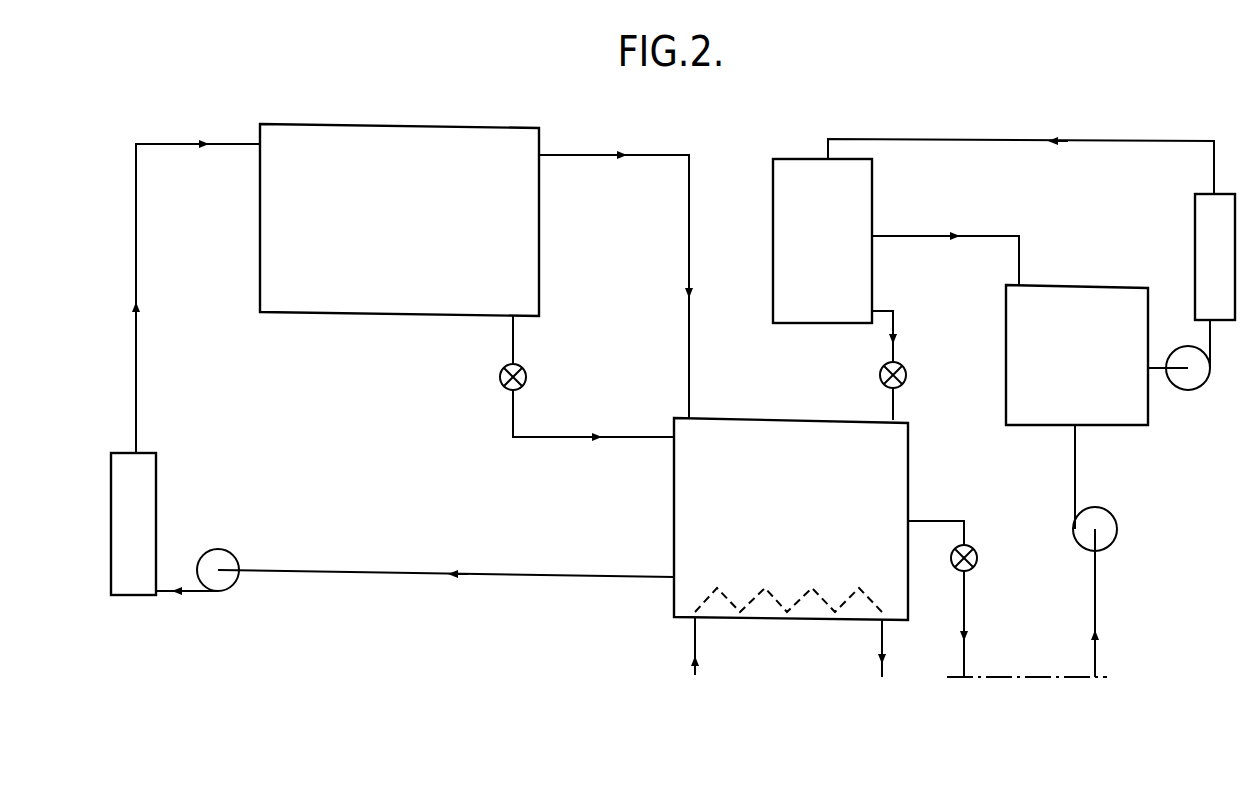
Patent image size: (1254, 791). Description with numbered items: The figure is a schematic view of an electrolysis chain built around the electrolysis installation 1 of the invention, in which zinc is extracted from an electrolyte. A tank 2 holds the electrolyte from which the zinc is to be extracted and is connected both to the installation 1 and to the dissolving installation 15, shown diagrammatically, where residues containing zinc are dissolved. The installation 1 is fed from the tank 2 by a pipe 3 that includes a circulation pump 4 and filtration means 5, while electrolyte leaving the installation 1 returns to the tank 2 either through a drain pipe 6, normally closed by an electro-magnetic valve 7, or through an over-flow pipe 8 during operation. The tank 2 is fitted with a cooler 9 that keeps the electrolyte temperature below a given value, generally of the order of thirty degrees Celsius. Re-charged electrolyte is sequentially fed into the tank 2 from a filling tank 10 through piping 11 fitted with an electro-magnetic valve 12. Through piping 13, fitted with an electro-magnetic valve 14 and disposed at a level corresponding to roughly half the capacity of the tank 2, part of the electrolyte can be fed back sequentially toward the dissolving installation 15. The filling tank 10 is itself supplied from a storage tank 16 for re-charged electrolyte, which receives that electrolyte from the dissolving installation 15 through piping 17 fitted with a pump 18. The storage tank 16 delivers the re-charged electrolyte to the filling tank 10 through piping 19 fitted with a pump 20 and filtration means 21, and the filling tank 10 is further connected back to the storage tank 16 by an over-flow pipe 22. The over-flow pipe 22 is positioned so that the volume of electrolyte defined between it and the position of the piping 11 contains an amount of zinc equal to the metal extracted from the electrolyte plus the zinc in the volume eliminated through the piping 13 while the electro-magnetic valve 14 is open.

The electrolysis installation 1 is at (387, 236).
The tank 2 is at (782, 529).
The pipe 3 is at (353, 574).
The circulation pump 4 is at (218, 549).
The filtration means 5 is at (156, 498).
The drain pipe 6 is at (548, 437).
The electro-magnetic valve 7 is at (526, 377).
The over-flow pipe 8 is at (689, 225).
The cooler 9 is at (792, 619).
The filling tank 10 is at (803, 257).
The piping 11 is at (895, 349).
The electro-magnetic valve 12 is at (879, 375).
The piping 13 is at (935, 521).
The electro-magnetic valve 14 is at (977, 558).
The dissolving installation 15 is at (1035, 677).
The storage tank 16 is at (1060, 366).
The piping 17 is at (1077, 468).
The pump 18 is at (1118, 529).
The piping 19 is at (1000, 141).
The pump 20 is at (1190, 390).
The filtration means 21 is at (1195, 250).
The over-flow pipe 22 is at (928, 236).